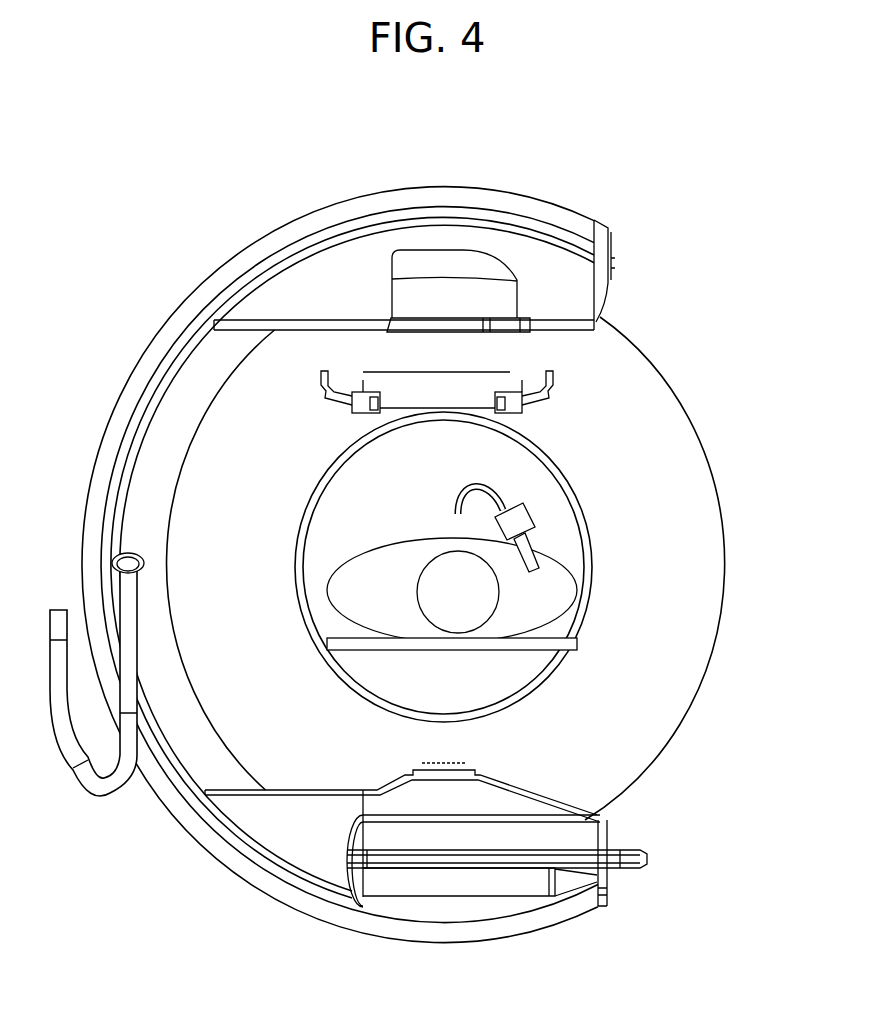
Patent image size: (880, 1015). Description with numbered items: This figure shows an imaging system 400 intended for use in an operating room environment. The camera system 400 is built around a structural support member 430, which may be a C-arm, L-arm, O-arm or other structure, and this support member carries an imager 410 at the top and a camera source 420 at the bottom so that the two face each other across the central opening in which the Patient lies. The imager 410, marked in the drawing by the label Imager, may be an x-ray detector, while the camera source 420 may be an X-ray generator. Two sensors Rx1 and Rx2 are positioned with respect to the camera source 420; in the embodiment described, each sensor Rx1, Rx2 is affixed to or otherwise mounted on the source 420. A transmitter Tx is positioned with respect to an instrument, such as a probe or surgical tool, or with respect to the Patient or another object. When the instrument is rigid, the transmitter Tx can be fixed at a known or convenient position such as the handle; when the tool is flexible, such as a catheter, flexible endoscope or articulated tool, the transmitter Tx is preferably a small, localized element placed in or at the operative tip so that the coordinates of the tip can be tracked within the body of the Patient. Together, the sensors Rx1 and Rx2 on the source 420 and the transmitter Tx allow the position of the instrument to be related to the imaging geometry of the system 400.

The imaging system 400 is at (162, 243).
The imager 410 is at (488, 302).
The camera source 420 is at (540, 820).
The structural support member 430 is at (77, 622).
The sensor Rx1 is at (350, 391).
The sensor Rx2 is at (517, 391).
The transmitter Tx is at (537, 520).
The imager Imager is at (436, 357).
The patient Patient is at (343, 562).